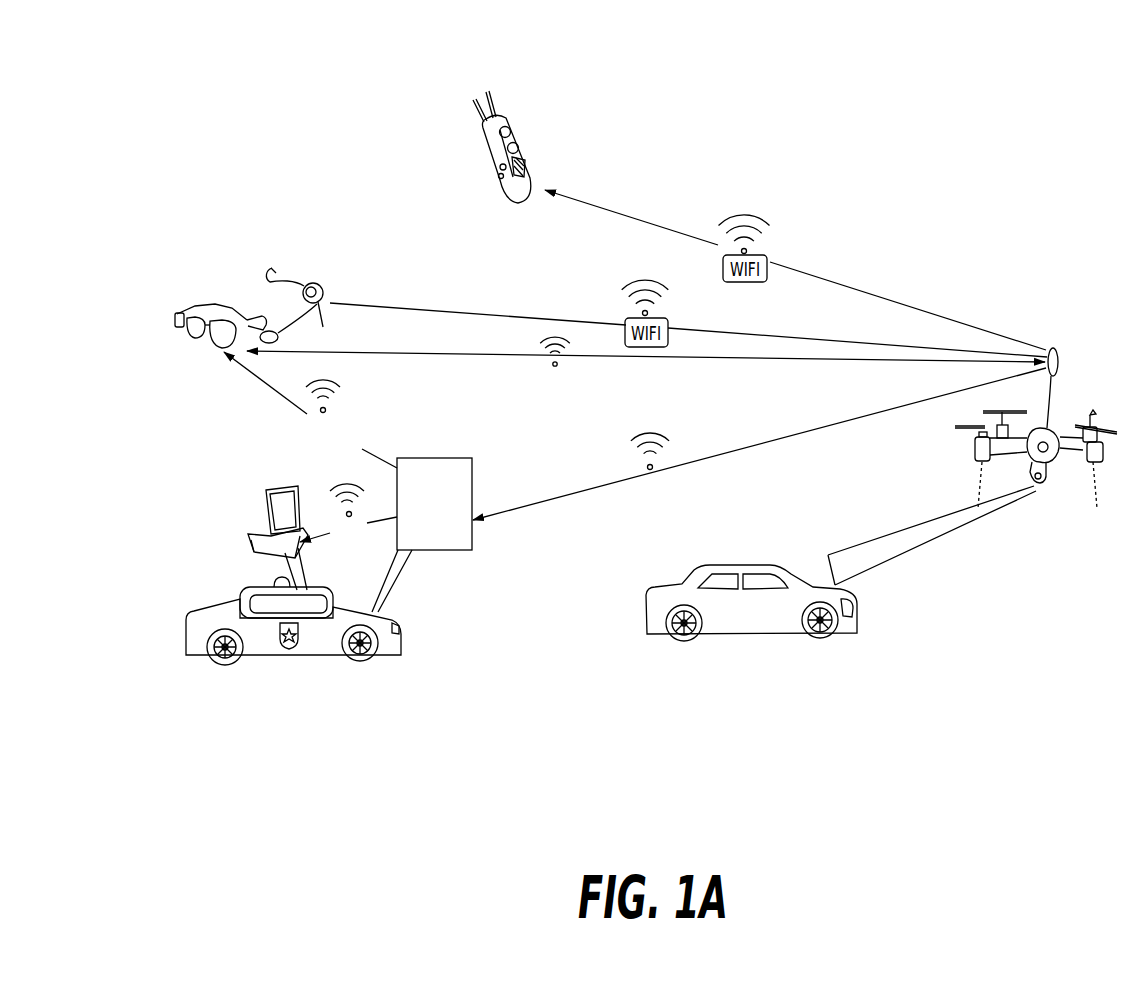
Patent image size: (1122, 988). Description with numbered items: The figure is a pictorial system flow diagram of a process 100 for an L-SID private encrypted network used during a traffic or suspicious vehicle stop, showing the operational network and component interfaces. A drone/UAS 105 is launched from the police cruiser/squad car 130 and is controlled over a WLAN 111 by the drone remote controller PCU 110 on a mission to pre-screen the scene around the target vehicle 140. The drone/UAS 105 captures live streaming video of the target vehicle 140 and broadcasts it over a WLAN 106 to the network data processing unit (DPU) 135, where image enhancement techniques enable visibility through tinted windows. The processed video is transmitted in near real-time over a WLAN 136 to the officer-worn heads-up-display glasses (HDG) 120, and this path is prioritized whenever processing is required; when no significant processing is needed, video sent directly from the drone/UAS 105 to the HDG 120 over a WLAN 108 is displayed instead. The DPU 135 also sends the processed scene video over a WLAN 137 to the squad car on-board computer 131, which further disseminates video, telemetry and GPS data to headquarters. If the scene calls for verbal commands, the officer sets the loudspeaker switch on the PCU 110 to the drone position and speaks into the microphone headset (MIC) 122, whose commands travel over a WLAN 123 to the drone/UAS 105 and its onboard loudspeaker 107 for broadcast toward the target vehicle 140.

The process 100 is at (758, 98).
The drone/UAS 105 is at (1057, 434).
The WLAN 106 is at (765, 439).
The onboard loudspeaker 107 is at (1047, 480).
The WLAN 108 is at (682, 362).
The drone remote controller PCU 110 is at (497, 162).
The WLAN 111 is at (855, 290).
The heads-up-display glasses (HDG) 120 is at (188, 340).
The microphone headset (MIC) 122 is at (305, 281).
The WLAN 123 is at (442, 313).
The police cruiser/squad car 130 is at (200, 607).
The squad car on-board computer 131 is at (262, 527).
The network data processing unit (DPU) 135 is at (473, 486).
The WLAN 136 is at (396, 467).
The WLAN 137 is at (314, 527).
The target vehicle 140 is at (860, 601).